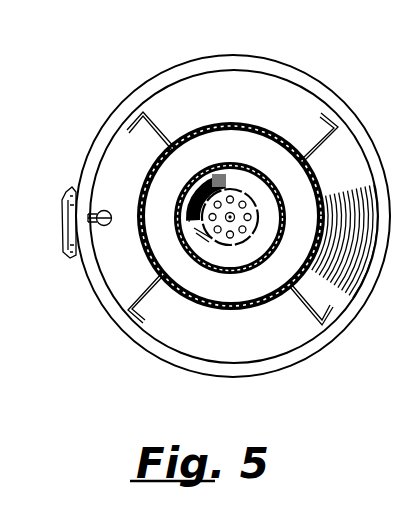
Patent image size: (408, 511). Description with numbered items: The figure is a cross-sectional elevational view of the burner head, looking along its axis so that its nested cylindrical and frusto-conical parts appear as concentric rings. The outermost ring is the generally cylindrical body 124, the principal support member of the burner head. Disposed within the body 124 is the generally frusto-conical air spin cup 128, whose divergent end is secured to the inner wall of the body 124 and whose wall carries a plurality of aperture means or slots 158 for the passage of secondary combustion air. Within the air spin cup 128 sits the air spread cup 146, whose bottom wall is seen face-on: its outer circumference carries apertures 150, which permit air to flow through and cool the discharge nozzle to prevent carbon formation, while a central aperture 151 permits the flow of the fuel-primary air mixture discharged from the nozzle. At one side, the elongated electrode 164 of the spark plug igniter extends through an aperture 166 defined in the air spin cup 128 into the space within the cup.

The body 124 is at (287, 72).
The air spin cup 128 is at (155, 170).
The air spread cup 146 is at (176, 208).
The apertures 150 is at (231, 197).
The central aperture 151 is at (235, 214).
The aperture means or slots 158 is at (308, 305).
The elongated electrode 164 is at (93, 258).
The aperture 166 is at (104, 227).